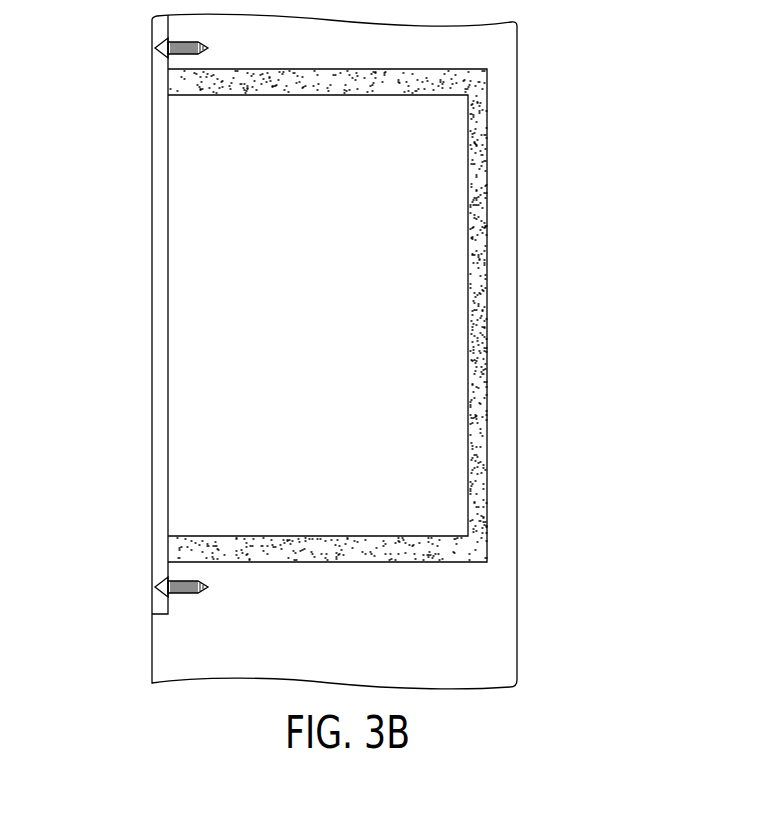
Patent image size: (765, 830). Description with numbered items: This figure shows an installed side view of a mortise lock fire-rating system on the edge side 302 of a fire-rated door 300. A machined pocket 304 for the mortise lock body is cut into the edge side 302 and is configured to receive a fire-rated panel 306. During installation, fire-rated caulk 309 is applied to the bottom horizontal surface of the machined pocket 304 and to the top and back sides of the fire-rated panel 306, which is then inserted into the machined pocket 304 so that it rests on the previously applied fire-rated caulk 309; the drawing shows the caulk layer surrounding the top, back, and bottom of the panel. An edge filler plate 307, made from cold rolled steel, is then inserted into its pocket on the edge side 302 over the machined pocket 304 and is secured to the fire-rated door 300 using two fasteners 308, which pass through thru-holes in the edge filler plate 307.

The fire-rated door 300 is at (349, 351).
The edge side 302 is at (160, 654).
The machined pocket 304 is at (485, 157).
The fire-rated panel 306 is at (195, 131).
The edge filler plate 307 is at (150, 183).
The fasteners 308 is at (153, 47).
The fire-rated caulk 309 is at (478, 81).